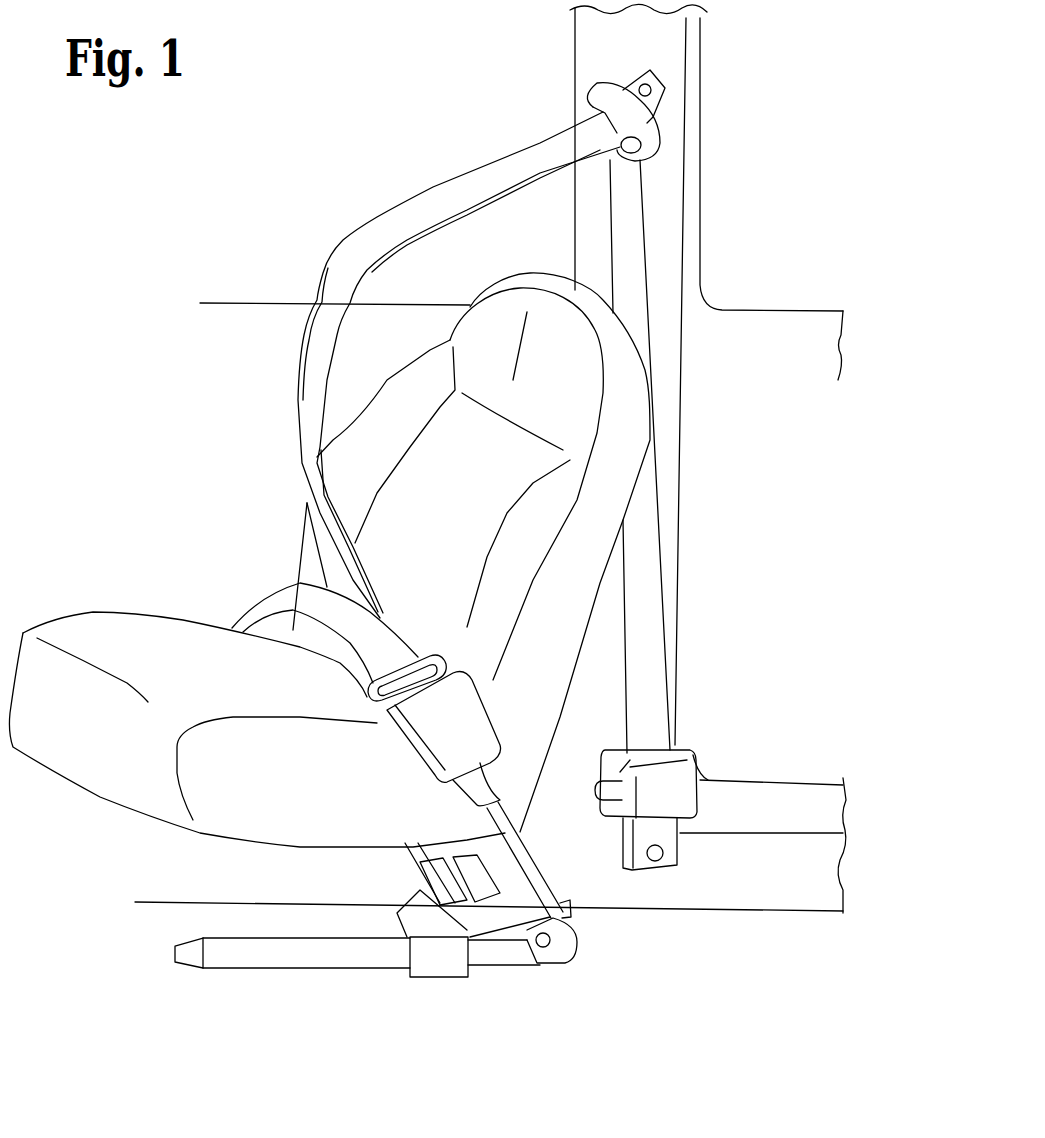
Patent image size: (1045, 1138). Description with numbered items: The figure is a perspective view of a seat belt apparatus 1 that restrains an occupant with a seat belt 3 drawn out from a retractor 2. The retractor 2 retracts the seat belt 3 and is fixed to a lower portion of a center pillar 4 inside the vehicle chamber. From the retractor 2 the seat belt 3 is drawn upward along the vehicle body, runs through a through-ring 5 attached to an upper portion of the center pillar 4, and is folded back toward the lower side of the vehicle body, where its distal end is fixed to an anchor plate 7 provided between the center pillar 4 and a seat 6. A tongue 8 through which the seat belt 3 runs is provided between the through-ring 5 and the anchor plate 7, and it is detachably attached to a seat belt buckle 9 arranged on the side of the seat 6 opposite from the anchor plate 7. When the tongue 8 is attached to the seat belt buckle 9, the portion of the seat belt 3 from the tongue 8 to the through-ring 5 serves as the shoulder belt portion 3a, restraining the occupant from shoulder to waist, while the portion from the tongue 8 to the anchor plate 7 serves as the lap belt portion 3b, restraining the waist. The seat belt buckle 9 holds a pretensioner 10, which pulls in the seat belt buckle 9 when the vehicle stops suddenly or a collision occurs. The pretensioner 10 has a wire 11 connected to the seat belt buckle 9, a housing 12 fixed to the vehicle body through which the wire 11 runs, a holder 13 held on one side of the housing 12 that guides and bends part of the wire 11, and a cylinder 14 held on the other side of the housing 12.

The seat belt apparatus 1 is at (340, 202).
The retractor 2 is at (675, 797).
The seat belt 3 is at (180, 338).
The shoulder belt portion 3a is at (313, 370).
The lap belt portion 3b is at (280, 597).
The center pillar 4 is at (672, 57).
The through-ring 5 is at (593, 100).
The seat 6 is at (97, 623).
The anchor plate 7 is at (423, 893).
The tongue 8 is at (370, 688).
The seat belt buckle 9 is at (453, 745).
The pretensioner 10 is at (600, 945).
The wire 11 is at (560, 873).
The housing 12 is at (437, 965).
The holder 13 is at (550, 960).
The cylinder 14 is at (283, 958).